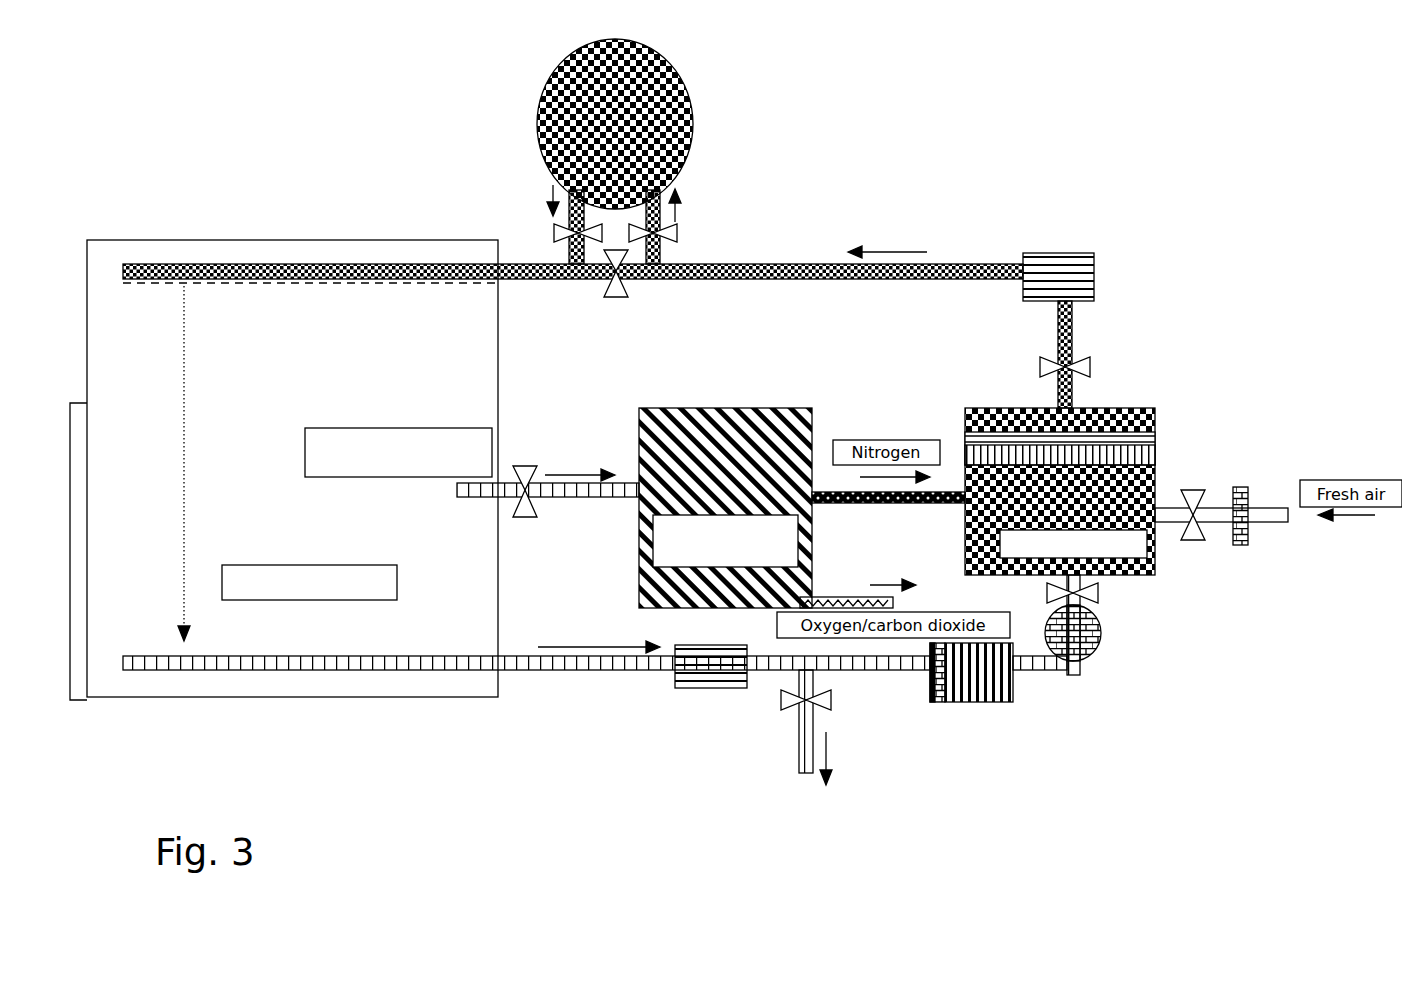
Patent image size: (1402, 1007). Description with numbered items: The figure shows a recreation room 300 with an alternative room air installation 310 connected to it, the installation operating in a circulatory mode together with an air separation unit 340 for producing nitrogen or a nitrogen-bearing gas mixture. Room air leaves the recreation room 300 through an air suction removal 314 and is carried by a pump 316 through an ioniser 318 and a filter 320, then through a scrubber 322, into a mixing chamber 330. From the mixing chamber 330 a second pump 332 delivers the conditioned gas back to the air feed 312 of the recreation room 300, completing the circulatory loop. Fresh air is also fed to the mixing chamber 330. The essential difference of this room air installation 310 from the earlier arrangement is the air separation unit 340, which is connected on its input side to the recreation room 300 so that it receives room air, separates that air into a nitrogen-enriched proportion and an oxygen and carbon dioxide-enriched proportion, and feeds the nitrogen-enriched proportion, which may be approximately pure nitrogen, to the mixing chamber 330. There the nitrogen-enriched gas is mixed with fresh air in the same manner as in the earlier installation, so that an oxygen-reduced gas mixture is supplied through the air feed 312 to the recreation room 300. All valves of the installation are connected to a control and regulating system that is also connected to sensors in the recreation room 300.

The recreation room 300 is at (321, 387).
The room air installation 310 is at (843, 200).
The air feed 312 is at (288, 270).
The air suction removal 314 is at (303, 671).
The pump 316 is at (697, 690).
The ioniser 318 is at (930, 702).
The filter 320 is at (985, 702).
The scrubber 322 is at (1100, 637).
The mixing chamber 330 is at (1120, 408).
The second pump 332 is at (1094, 272).
The air separation unit 340 is at (730, 408).